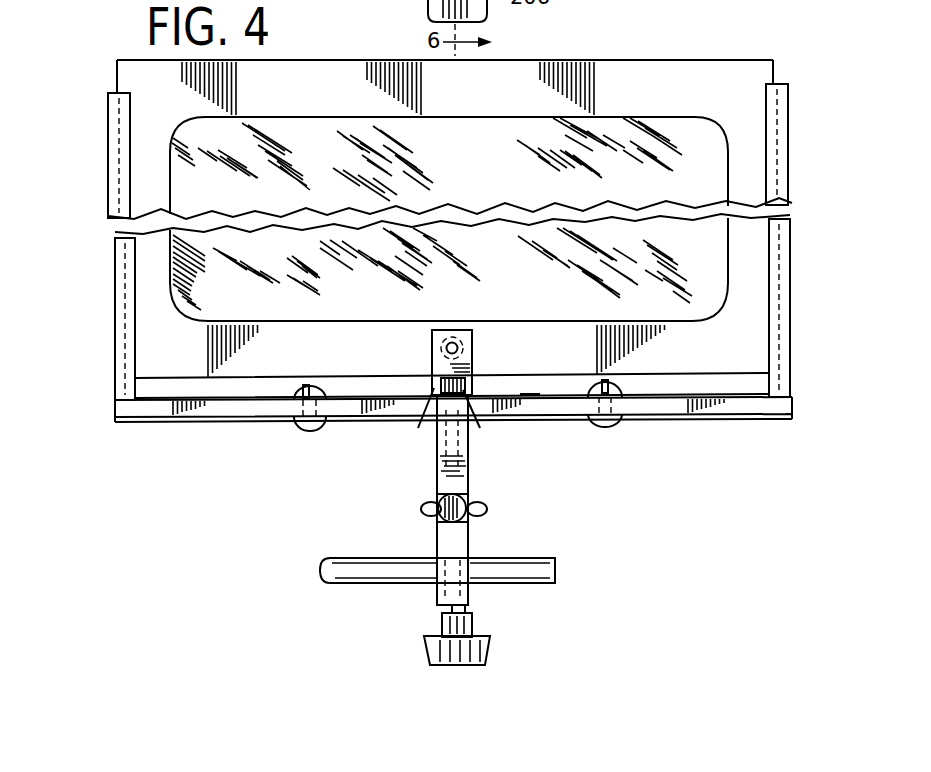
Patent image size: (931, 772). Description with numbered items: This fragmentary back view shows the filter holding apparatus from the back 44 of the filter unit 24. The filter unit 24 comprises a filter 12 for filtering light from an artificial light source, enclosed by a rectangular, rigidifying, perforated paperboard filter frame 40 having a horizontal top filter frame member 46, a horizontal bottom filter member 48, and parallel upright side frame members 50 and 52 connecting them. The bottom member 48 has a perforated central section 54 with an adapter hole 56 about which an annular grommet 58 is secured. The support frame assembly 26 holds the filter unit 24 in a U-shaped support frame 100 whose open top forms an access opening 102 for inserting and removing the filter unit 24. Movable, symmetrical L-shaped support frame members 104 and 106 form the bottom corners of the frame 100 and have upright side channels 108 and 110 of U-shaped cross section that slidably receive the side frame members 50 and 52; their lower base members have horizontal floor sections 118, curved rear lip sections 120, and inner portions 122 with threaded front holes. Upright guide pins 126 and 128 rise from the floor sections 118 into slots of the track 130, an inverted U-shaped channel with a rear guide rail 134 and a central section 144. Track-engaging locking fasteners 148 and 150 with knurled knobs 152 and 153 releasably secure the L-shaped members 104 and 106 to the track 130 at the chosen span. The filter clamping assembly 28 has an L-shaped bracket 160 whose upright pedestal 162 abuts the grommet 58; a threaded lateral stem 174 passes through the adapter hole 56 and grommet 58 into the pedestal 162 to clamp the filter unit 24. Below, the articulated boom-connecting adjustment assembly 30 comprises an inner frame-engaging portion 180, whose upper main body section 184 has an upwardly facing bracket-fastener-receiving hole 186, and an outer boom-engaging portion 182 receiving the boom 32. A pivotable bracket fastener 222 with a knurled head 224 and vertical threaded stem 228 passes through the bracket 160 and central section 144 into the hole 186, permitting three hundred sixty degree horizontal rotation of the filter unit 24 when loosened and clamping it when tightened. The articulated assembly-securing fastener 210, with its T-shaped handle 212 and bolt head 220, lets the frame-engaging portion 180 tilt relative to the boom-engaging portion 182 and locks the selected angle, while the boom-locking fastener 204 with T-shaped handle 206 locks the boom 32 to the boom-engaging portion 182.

The filter 12 is at (470, 133).
The filter unit 24 is at (620, 112).
The support frame assembly 26 is at (797, 423).
The filter clamping assembly 28 is at (480, 372).
The articulated boom-connecting adjustment assembly 30 is at (478, 477).
The boom 32 is at (535, 558).
The filter frame 40 is at (117, 60).
The back 44 is at (295, 72).
The top filter frame member 46 is at (602, 60).
The bottom filter member 48 is at (272, 336).
The side frame member 50 is at (737, 172).
The side frame member 52 is at (160, 172).
The central section 54 is at (494, 342).
The adapter hole 56 is at (446, 349).
The grommet 58 is at (462, 332).
The support frame 100 is at (800, 163).
The access opening 102 is at (740, 82).
The L-shaped support frame member 104 is at (793, 327).
The L-shaped support frame member 106 is at (115, 352).
The side channel 108 is at (788, 103).
The side channel 110 is at (108, 131).
The floor section 118 is at (716, 416).
The rear wall lip section 120 is at (656, 418).
The inner portion 122 is at (251, 417).
The guide pin 126 is at (609, 382).
The guide pin 128 is at (304, 384).
The track 130 is at (534, 417).
The rear guide rail 134 is at (220, 410).
The central section 144 is at (415, 410).
The track-engaging and locking fastener 148 is at (606, 428).
The track-engaging and locking fastener 150 is at (309, 432).
The track-securing knob 152 is at (598, 390).
The track-securing knob 153 is at (296, 388).
The L-shaped bracket 160 is at (450, 320).
The pedestal 162 is at (432, 334).
The threaded lateral stem 174 is at (452, 358).
The inner frame-engaging portion 180 is at (438, 482).
The outer boom-engaging portion 182 is at (470, 592).
The upper main body section 184 is at (440, 462).
The bracket-fastener-receiving hole 186 is at (440, 440).
The boom-locking fastener 204 is at (425, 663).
The handle 206 is at (490, 648).
The articulated assembly-securing fastener 210 is at (421, 509).
The handle 212 is at (487, 508).
The bolt head 220 is at (436, 524).
The bracket fastener 222 is at (470, 396).
The knurled head 224 is at (432, 398).
The threaded stem 228 is at (472, 442).